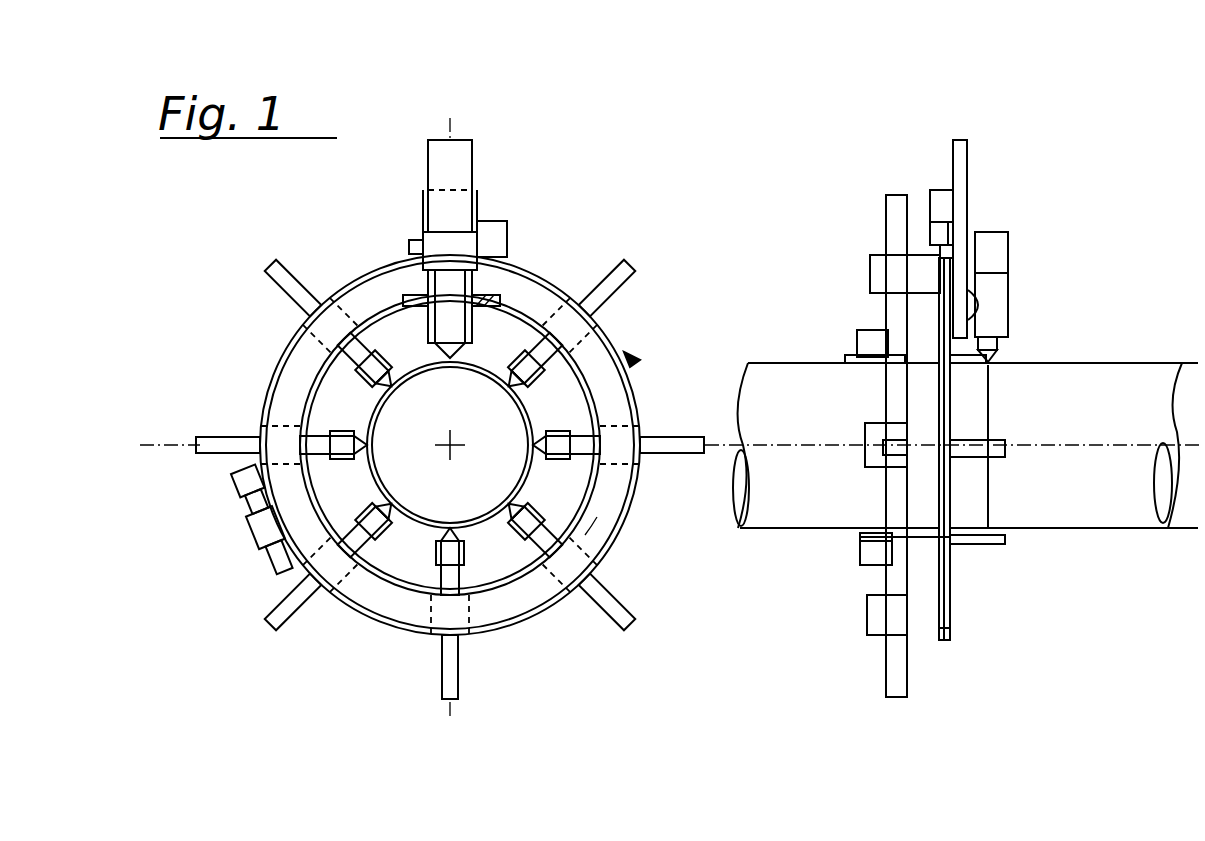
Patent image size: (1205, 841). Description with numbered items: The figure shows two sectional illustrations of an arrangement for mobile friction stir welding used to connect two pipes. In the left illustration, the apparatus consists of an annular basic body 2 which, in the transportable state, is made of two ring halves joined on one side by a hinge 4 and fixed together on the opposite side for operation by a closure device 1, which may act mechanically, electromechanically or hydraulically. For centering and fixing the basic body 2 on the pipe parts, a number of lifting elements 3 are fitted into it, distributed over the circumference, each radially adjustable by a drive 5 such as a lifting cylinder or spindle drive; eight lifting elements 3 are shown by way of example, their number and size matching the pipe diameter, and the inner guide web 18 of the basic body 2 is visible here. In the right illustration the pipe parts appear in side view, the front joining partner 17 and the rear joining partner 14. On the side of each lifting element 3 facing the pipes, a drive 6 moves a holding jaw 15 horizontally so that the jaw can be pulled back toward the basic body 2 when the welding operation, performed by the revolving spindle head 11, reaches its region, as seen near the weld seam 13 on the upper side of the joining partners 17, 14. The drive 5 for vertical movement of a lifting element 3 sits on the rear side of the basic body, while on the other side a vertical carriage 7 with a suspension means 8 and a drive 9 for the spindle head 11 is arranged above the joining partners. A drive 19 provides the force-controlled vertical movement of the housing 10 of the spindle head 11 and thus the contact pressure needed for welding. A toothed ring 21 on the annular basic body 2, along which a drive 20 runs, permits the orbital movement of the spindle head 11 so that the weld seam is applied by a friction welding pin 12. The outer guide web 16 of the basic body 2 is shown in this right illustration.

The closure device 1 is at (247, 513).
The annular basic body 2 is at (287, 375).
The lifting elements 3 is at (205, 437).
The hinge 4 is at (636, 365).
The drive 5 is at (863, 435).
The drive 6 is at (855, 527).
The vertical carriage 7 is at (968, 170).
The suspension means 8 is at (972, 295).
The drive 9 is at (992, 248).
The housing 10 is at (1008, 312).
The spindle head 11 is at (992, 352).
The friction welding pin 12 is at (987, 360).
The weld seam 13 is at (990, 392).
The rear joining partner 14 is at (1127, 518).
The holding jaw 15 is at (957, 364).
The outer guide web 16 is at (949, 622).
The front joining partner 17 is at (795, 502).
The inner guide web 18 is at (597, 517).
The drive 19 is at (940, 198).
The drive 20 is at (935, 225).
The toothed ring 21 is at (942, 640).